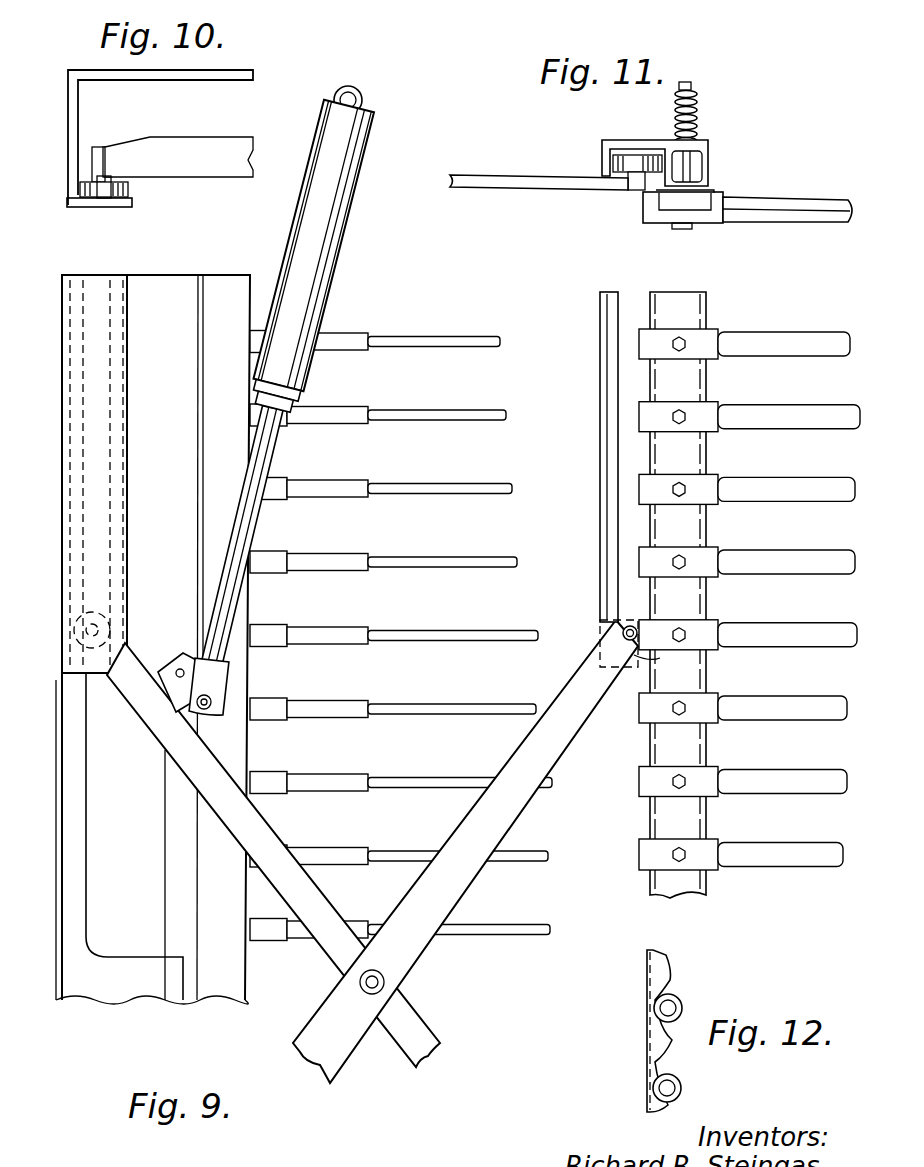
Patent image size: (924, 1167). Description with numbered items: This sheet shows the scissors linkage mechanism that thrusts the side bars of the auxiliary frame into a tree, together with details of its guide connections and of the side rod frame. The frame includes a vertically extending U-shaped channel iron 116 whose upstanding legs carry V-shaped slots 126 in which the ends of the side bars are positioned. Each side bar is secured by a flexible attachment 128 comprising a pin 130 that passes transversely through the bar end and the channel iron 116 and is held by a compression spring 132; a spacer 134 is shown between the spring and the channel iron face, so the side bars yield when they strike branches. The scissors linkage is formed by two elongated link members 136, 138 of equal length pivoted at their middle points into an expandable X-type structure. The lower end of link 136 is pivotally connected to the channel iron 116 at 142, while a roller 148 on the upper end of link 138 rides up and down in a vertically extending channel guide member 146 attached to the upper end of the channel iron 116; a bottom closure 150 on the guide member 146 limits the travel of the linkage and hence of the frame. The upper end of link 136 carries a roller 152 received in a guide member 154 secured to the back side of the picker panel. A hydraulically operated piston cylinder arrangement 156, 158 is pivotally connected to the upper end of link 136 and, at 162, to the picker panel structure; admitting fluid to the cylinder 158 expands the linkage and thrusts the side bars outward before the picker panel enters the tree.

In FIG. 9, the channel iron 116 is at (708, 305).
In FIG. 11, the channel iron 116 is at (717, 197).
In FIG. 12, the channel iron 116 is at (645, 1068).
In FIG. 9, the V-shaped slot 126 is at (706, 365).
In FIG. 12, the V-shaped slot 126 is at (672, 988).
In FIG. 11, the flexible attachment 128 is at (703, 130).
In FIG. 9, the pin 130 is at (706, 585).
In FIG. 11, the compression spring 132 is at (695, 92).
In FIG. 11, the spacer 134 is at (708, 157).
In FIG. 9, the link member 136 is at (205, 708).
In FIG. 9, the link member 138 is at (560, 743).
In FIG. 9, the pivotal connection 142 is at (442, 965).
In FIG. 9, the channel guide member 146 is at (600, 335).
In FIG. 11, the channel guide member 146 is at (603, 160).
In FIG. 9, the roller 148 is at (628, 625).
In FIG. 11, the roller 148 is at (634, 155).
In FIG. 9, the bottom closure 150 is at (628, 668).
In FIG. 9, the roller 152 is at (98, 668).
In FIG. 10, the roller 152 is at (125, 193).
In FIG. 9, the guide member 154 is at (45, 945).
In FIG. 10, the guide member 154 is at (222, 72).
In FIG. 9, the piston 156 is at (262, 452).
In FIG. 9, the cylinder 158 is at (372, 146).
In FIG. 9, the pivotal connection 162 is at (354, 96).